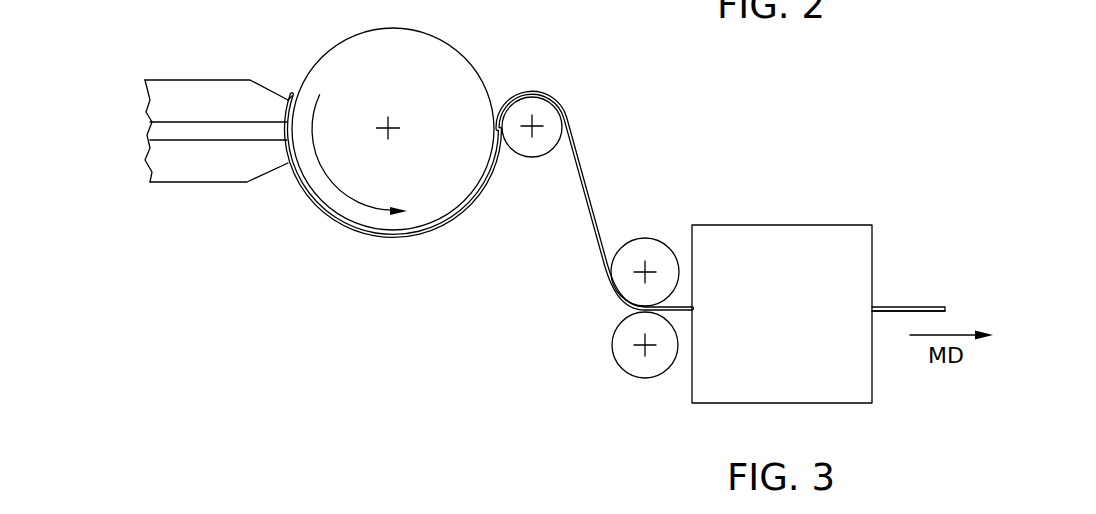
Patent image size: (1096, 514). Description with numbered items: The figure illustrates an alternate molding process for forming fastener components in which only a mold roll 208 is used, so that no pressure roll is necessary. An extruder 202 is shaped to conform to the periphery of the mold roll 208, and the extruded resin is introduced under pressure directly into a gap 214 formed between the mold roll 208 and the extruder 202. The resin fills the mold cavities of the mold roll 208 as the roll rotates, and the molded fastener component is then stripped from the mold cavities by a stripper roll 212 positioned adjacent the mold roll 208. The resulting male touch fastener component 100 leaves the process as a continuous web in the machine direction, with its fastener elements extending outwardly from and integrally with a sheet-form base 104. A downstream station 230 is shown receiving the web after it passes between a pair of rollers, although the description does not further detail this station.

The male touch fastener component 100 is at (891, 276).
The sheet-form base 104 is at (890, 314).
The extruder 202 is at (183, 80).
The mold roll 208 is at (437, 87).
The stripper roll 212 is at (525, 157).
The gap 214 is at (284, 74).
The processing unit 230 is at (768, 225).